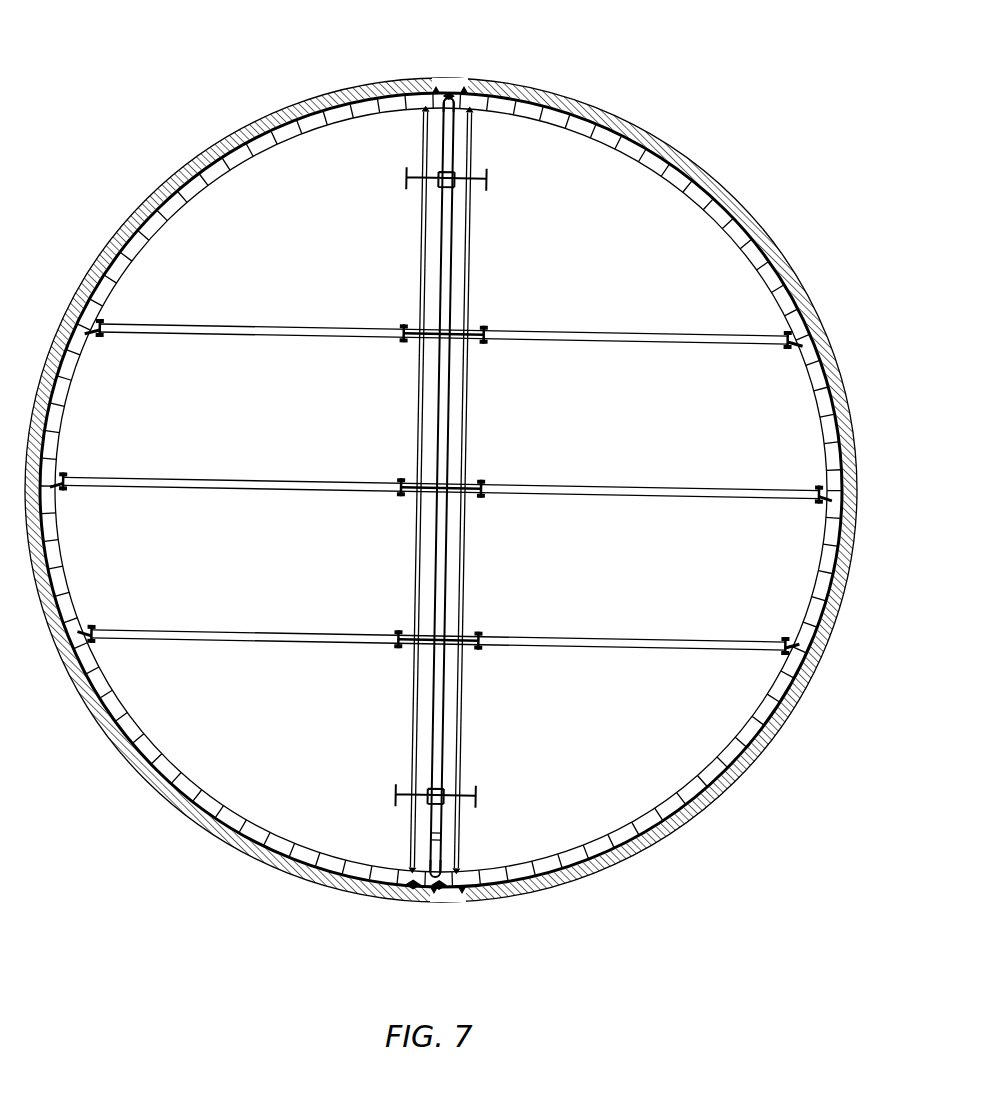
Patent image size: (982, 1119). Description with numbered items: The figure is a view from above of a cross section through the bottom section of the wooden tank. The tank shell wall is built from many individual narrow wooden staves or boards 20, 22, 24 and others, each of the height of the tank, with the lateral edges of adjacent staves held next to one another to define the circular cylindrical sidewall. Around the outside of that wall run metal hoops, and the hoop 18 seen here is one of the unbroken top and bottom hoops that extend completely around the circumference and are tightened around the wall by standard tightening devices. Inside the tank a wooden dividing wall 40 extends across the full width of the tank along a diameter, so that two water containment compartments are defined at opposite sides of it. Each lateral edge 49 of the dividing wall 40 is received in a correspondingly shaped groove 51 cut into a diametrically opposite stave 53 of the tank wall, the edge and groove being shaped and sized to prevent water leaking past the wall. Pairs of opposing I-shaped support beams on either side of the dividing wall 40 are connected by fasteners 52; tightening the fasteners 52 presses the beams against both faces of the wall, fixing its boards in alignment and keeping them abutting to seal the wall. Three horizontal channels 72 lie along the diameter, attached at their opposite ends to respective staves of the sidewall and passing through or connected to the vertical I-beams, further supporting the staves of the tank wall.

The hoop 18 is at (441, 480).
The wooden stave 20 is at (657, 135).
The wooden stave 22 is at (632, 125).
The wooden stave 24 is at (600, 112).
The dividing wall 40 is at (455, 262).
The lateral edge 49 is at (447, 868).
The groove 51 is at (414, 896).
The fastener 52 is at (453, 90).
The stave 53 is at (446, 896).
The horizontal channel 72 is at (606, 345).